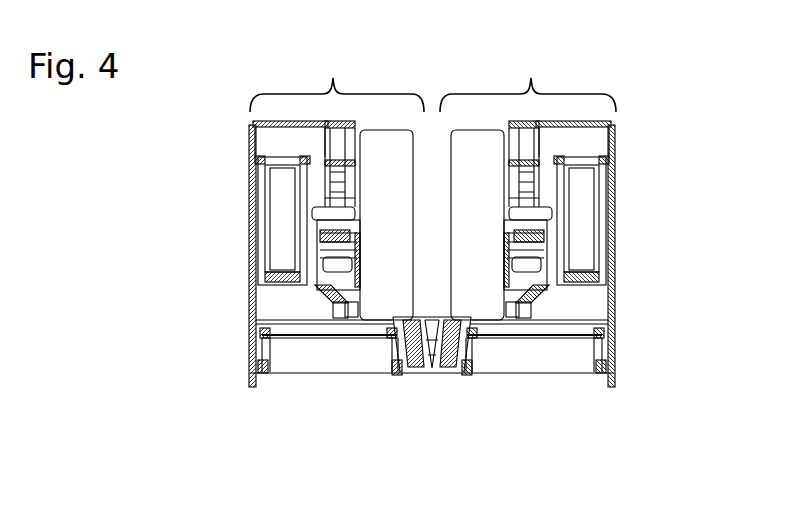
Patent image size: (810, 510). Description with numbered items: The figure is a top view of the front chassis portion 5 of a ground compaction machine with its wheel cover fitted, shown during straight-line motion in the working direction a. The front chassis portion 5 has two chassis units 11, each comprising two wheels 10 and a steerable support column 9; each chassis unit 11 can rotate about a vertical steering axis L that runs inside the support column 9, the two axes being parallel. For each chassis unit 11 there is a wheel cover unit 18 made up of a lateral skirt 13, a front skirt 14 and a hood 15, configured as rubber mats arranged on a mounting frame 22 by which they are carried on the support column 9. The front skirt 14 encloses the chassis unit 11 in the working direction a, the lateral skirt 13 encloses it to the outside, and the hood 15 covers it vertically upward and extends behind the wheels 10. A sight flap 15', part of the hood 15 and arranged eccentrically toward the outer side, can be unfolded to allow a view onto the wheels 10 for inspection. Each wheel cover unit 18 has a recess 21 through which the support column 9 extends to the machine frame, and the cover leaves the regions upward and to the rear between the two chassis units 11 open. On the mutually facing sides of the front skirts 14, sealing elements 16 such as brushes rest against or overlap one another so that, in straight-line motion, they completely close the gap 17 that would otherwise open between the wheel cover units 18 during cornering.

The front chassis portion 5 is at (176, 268).
The support column 9 is at (524, 232).
The wheel 10 is at (468, 147).
The chassis unit 11 is at (433, 81).
The lateral skirt 13 is at (252, 274).
The front skirt 14 is at (342, 352).
The hood 15 is at (426, 144).
The sight flap 15' is at (441, 101).
The sealing element 16 is at (418, 352).
The gap 17 is at (436, 396).
The wheel cover unit 18 is at (277, 362).
The recess 21 is at (308, 275).
The mounting frame 22 is at (250, 236).
The steering axis L is at (338, 233).
The working direction a is at (735, 178).